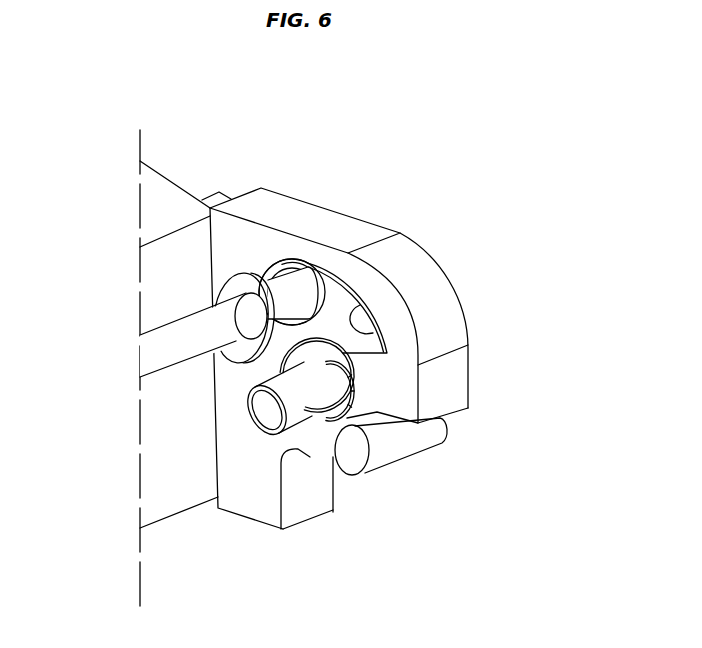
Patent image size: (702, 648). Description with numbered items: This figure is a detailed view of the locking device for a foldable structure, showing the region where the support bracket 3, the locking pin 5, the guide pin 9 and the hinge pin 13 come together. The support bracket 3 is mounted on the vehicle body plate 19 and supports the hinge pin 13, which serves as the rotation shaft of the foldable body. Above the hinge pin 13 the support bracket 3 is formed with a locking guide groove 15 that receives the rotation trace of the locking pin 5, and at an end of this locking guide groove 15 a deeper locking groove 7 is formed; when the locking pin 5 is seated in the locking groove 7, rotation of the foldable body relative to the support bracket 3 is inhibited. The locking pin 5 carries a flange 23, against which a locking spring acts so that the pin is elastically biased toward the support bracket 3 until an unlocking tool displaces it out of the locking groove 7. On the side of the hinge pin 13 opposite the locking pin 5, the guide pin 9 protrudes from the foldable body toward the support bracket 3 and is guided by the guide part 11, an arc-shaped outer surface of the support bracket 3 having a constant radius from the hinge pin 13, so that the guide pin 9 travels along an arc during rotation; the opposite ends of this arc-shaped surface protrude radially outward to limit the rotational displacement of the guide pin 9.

The support bracket 3 is at (466, 283).
The locking pin 5 is at (294, 268).
The locking groove 7 is at (300, 297).
The guide pin 9 is at (402, 463).
The guide part 11 is at (309, 460).
The hinge pin 13 is at (258, 417).
The locking guide groove 15 is at (385, 327).
The vehicle body plate 19 is at (165, 209).
The flange 23 is at (225, 292).